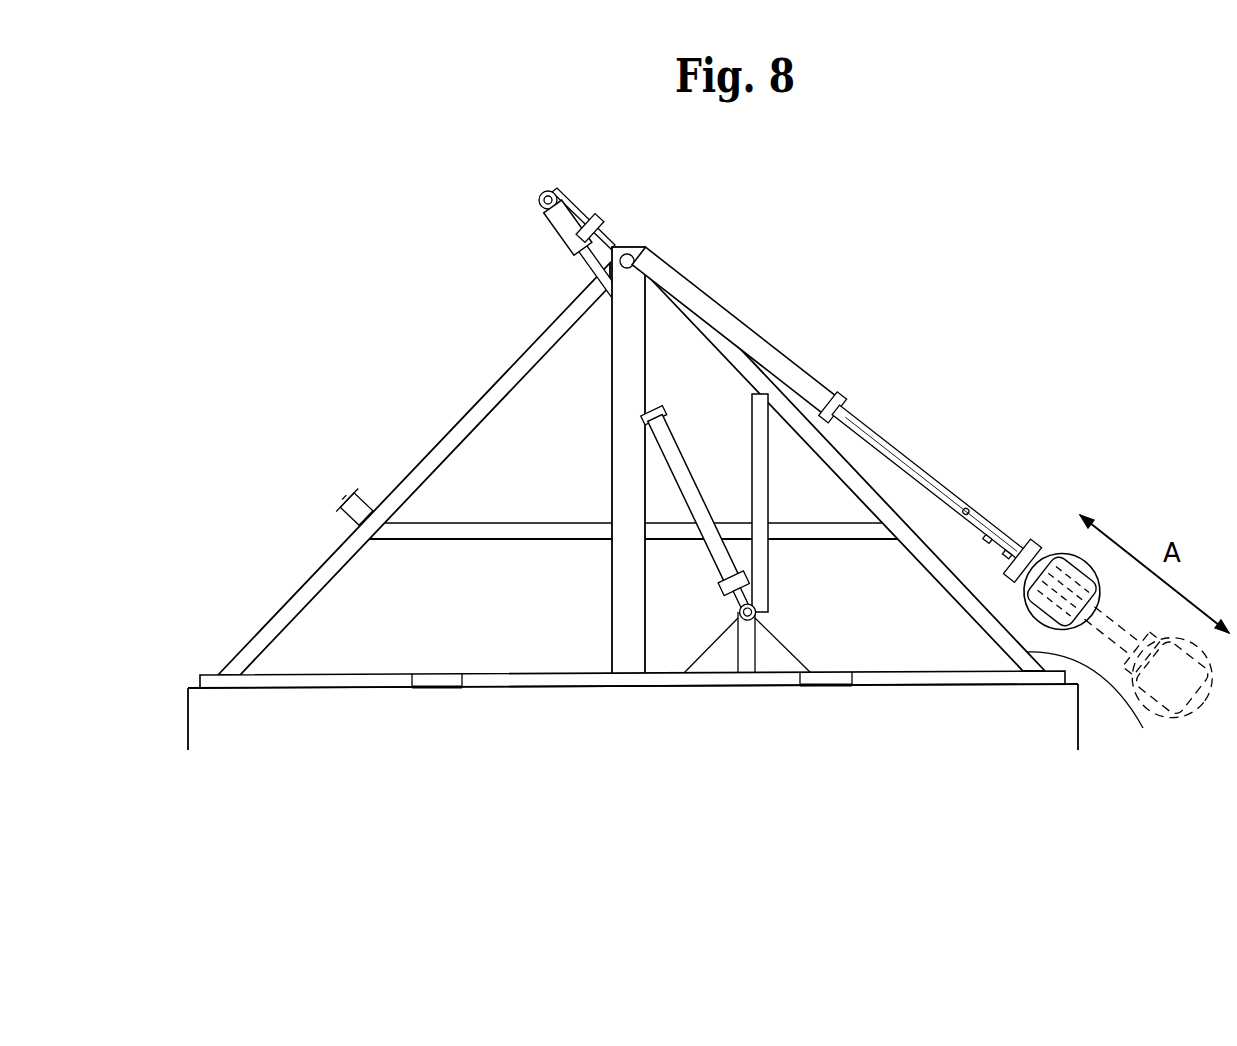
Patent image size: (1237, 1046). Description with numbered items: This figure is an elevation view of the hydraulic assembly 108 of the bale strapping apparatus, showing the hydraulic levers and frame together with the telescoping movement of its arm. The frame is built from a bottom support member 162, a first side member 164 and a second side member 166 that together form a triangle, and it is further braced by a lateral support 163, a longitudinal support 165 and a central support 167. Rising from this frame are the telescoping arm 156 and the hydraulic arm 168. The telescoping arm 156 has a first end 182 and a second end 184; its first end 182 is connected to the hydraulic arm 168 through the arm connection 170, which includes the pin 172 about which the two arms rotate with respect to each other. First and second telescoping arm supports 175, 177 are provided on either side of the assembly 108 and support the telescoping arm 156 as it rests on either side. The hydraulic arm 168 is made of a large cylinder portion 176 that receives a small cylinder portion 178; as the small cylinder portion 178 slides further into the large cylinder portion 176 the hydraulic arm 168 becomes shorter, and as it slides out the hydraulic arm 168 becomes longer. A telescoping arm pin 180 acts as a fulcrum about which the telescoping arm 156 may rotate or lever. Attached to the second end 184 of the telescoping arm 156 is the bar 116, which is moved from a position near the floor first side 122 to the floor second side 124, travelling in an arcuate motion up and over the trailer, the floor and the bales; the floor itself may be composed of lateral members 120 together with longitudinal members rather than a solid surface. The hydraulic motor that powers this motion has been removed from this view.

The hydraulic assembly 108 is at (803, 254).
The bar 116 is at (1079, 577).
The lateral members 120 is at (862, 700).
The first side 122 is at (1038, 702).
The second side 124 is at (245, 703).
The telescoping arm 156 is at (812, 381).
The bottom support member 162 is at (620, 686).
The lateral support 163 is at (507, 541).
The first side member 164 is at (1127, 664).
The longitudinal support 165 is at (766, 574).
The second side member 166 is at (290, 610).
The central support 167 is at (618, 420).
The hydraulic arm 168 is at (675, 447).
The arm connection 170 is at (549, 188).
The pin 172 is at (543, 204).
The first telescoping arm support 175 is at (912, 491).
The large cylinder portion 176 is at (735, 579).
The second telescoping arm support 177 is at (340, 502).
The small cylinder portion 178 is at (578, 276).
The telescoping arm pin 180 is at (634, 262).
The first end 182 is at (618, 213).
The second end 184 is at (1028, 550).